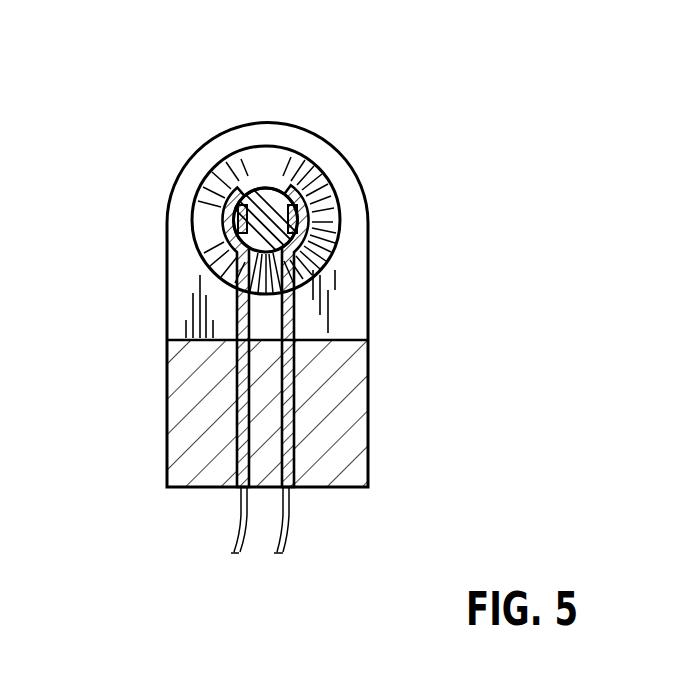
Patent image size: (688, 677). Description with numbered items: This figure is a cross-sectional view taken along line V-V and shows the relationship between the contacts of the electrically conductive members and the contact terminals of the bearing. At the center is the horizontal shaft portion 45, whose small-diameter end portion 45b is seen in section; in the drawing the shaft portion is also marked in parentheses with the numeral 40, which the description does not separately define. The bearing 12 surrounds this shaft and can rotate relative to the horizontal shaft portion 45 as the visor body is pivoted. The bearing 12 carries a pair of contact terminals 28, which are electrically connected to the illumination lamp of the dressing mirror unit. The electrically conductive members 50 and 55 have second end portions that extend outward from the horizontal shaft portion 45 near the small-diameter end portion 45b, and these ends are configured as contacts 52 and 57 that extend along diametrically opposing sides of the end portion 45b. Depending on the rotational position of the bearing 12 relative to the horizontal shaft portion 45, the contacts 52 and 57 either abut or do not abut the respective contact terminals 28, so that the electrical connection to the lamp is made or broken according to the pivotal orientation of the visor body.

The bearing 12 is at (351, 137).
The sensor element 40 is at (215, 147).
The horizontal shaft portion 45 is at (243, 172).
The small-diameter end portion 45b is at (268, 200).
The contact terminals 28 is at (297, 221).
The electrically conductive member 50 is at (366, 369).
The contact 52 is at (305, 238).
The electrically conductive member 55 is at (143, 338).
The contact 57 is at (238, 238).